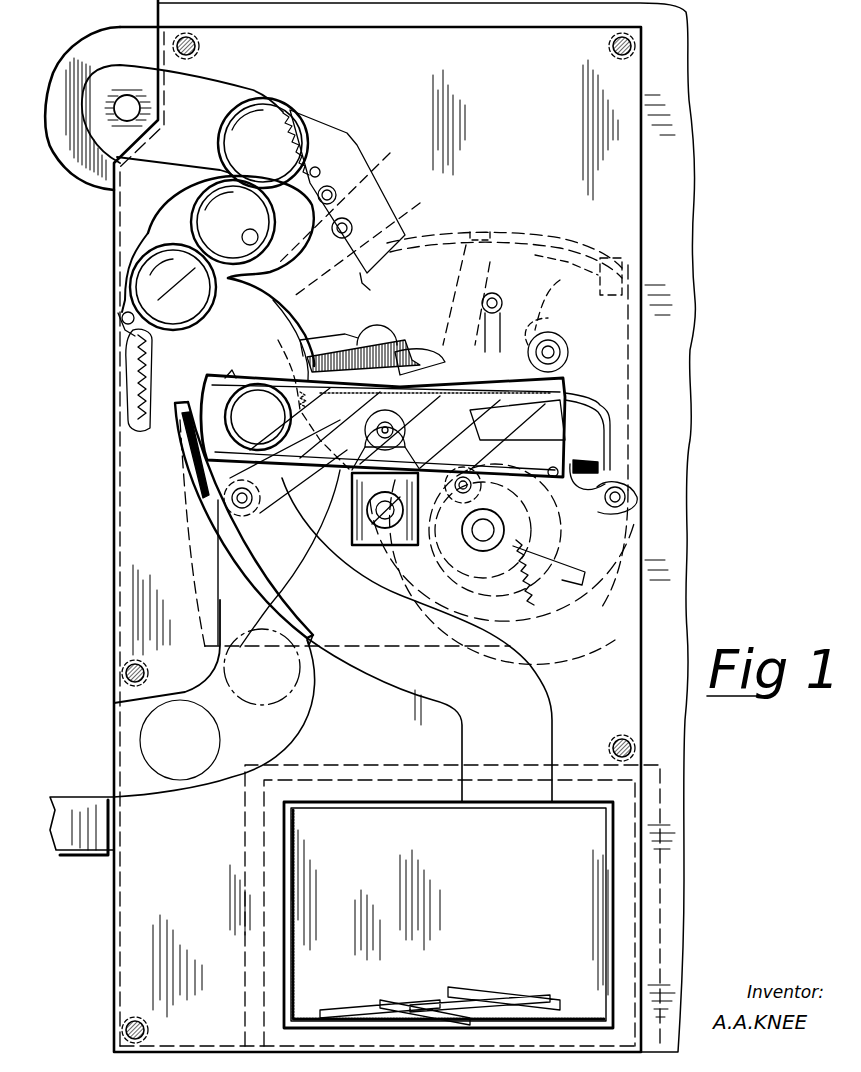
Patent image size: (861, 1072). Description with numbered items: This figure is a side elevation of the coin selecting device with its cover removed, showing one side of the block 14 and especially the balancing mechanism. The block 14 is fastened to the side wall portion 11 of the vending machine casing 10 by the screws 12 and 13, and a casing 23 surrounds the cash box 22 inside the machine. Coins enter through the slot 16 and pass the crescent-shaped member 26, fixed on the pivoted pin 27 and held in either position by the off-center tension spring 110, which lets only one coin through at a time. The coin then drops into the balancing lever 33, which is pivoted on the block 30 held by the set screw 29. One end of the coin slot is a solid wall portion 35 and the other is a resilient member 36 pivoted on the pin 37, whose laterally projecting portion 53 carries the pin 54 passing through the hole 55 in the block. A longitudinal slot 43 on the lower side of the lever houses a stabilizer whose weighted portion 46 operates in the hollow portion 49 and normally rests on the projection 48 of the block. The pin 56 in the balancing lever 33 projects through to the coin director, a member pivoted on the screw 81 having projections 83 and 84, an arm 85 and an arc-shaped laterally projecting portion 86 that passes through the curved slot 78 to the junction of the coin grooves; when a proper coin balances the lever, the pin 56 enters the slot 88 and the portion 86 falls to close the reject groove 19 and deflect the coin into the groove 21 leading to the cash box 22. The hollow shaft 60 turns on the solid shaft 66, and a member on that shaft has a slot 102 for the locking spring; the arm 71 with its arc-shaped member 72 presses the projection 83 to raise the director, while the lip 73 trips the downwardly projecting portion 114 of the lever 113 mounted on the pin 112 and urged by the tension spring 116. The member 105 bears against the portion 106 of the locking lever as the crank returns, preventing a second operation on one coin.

The casing 10 is at (70, 815).
The side wall portion 11 is at (659, 630).
The screw 12 is at (195, 38).
The screw 13 is at (148, 670).
The block 14 is at (394, 526).
The slot 16 is at (164, 108).
The groove 19 is at (214, 698).
The groove 21 is at (378, 636).
The cash box 22 is at (448, 915).
The casing 23 is at (376, 762).
The crescent-shaped member 26 is at (128, 290).
The pin 27 is at (122, 320).
The set screw 29 is at (384, 548).
The block 30 is at (424, 550).
The balancing lever 33 is at (226, 376).
The solid wall portion 35 is at (204, 382).
The resilient member 36 is at (307, 350).
The pin 37 is at (258, 342).
The slot 43 is at (300, 508).
The weighted portion 46 is at (603, 464).
The projection 48 is at (584, 490).
The milled-out hollow portion 49 is at (630, 493).
The laterally projecting portion 53 is at (372, 335).
The pin 54 is at (400, 345).
The hole 55 is at (378, 342).
The pin 56 is at (588, 402).
The hollow shaft 60 is at (515, 552).
The solid shaft 66 is at (488, 530).
The arm 71 is at (447, 298).
The arc shaped member 72 is at (572, 258).
The lip 73 is at (500, 230).
The curved slot 78 is at (207, 514).
The screw 81 is at (566, 322).
The projection 83 is at (606, 268).
The projection 84 is at (585, 358).
The arm 85 is at (258, 403).
The laterally projecting portion 86 is at (195, 470).
The laterally projecting slot 88 is at (432, 434).
The slot 102 is at (566, 626).
The member 105 is at (512, 310).
The portion 106 is at (540, 327).
The tension spring 110 is at (132, 386).
The pin 112 is at (347, 200).
The lever 113 is at (408, 212).
The downwardly projecting portion 114 is at (375, 288).
The tension spring 116 is at (328, 142).